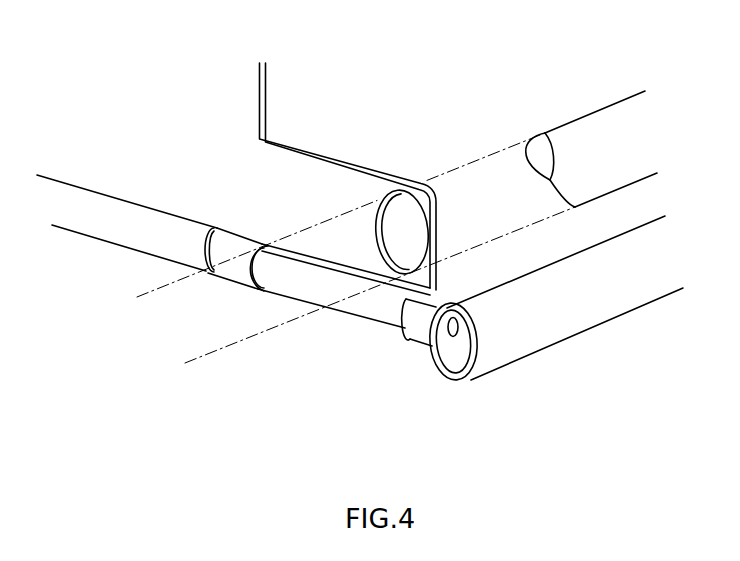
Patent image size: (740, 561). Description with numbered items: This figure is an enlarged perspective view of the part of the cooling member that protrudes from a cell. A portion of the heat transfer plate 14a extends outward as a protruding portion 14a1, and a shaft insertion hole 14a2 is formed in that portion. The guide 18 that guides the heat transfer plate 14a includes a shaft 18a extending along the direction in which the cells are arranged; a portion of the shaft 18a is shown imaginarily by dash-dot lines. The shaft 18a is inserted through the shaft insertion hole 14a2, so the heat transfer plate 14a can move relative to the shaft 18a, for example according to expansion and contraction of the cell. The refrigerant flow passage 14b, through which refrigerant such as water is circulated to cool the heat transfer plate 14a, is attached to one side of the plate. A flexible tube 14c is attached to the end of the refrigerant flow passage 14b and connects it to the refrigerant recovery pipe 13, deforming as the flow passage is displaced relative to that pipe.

The refrigerant recovery pipe 13 is at (623, 300).
The heat transfer plate 14a is at (338, 176).
The protruding portion 14a1 is at (347, 195).
The shaft insertion hole 14a2 is at (418, 213).
The refrigerant flow passage 14b is at (92, 226).
The flexible tube 14c is at (363, 305).
The guide 18 is at (559, 118).
The shaft 18a is at (603, 115).